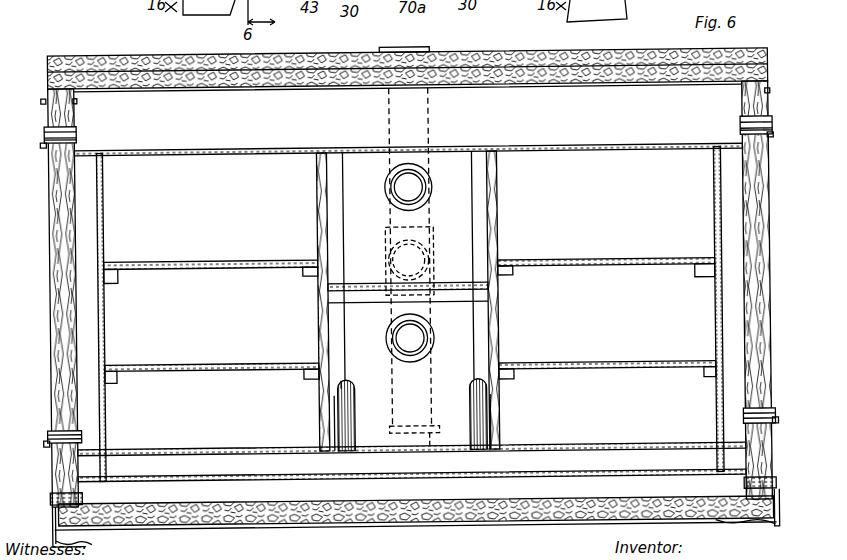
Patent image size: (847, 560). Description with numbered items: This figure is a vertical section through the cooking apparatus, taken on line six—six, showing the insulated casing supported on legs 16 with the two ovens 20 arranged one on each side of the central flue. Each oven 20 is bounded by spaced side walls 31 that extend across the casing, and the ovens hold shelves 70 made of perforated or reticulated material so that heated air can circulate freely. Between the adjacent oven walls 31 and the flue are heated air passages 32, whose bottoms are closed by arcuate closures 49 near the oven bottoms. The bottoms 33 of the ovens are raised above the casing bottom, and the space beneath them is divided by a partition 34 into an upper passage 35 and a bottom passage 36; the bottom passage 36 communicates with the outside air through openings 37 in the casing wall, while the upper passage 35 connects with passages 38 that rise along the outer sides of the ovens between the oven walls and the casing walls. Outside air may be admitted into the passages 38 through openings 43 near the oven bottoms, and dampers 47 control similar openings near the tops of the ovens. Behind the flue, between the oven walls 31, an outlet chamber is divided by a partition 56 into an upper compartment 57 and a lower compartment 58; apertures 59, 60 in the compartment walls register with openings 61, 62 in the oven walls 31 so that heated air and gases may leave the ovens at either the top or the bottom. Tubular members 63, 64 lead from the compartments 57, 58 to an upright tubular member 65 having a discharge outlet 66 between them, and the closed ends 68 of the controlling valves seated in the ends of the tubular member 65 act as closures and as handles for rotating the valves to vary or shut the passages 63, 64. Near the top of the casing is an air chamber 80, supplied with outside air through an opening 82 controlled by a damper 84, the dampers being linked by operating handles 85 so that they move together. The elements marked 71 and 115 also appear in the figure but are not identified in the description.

The air chamber 80 is at (622, 104).
The opening 82 is at (78, 136).
The damper 84 is at (46, 130).
The operating handle 85 is at (46, 143).
The corner post 115 is at (763, 325).
The opening 43 is at (76, 424).
The damper 47 is at (47, 424).
The closure 49 is at (773, 414).
The opening 37 is at (57, 492).
The passage 38 is at (100, 336).
The upper compartment 57 is at (456, 165).
The opening 61 is at (318, 174).
The aperture 59 is at (331, 187).
The partition 56 is at (458, 290).
The tubular member 65 is at (432, 122).
The discharge outlet 66 is at (434, 253).
The tubular member 63 is at (400, 191).
The tubular member 64 is at (405, 338).
The side wall 31 is at (104, 245).
The shelf 70 is at (240, 270).
The oven 20 is at (402, 208).
The oven bottom 33 is at (600, 445).
The floor layer 71 is at (681, 445).
The upper passage 35 is at (412, 466).
The bottom passage 36 is at (415, 503).
The partition 34 is at (330, 482).
The closed end 68 is at (424, 465).
The aperture 60 is at (346, 430).
The opening 62 is at (337, 404).
The lower compartment 58 is at (365, 378).
The heated air passage 32 is at (347, 418).
The leg 16 is at (107, 529).